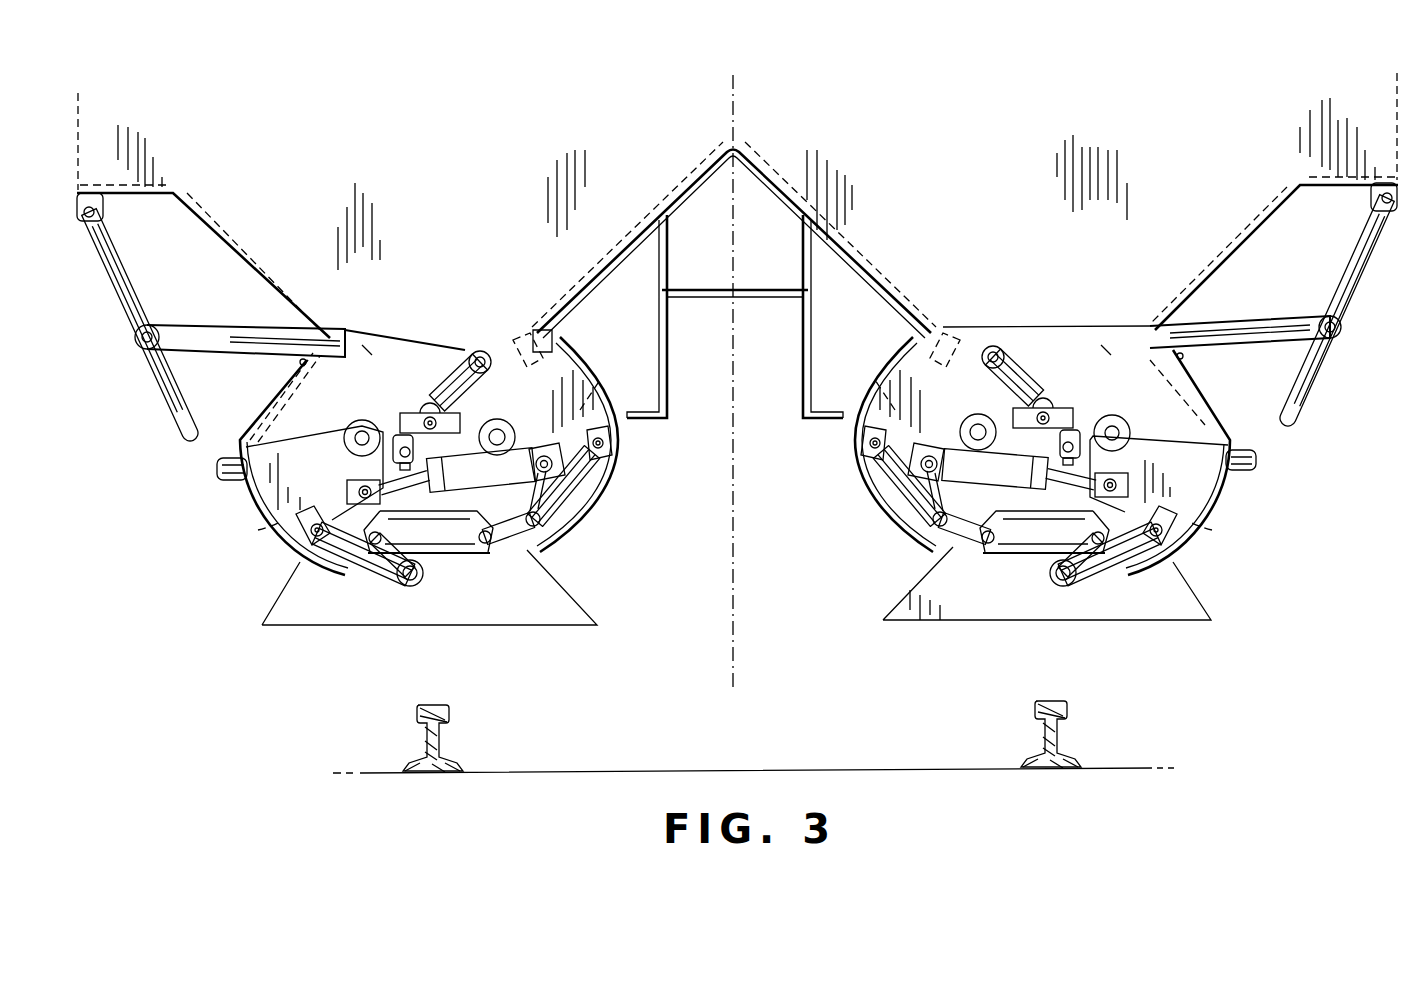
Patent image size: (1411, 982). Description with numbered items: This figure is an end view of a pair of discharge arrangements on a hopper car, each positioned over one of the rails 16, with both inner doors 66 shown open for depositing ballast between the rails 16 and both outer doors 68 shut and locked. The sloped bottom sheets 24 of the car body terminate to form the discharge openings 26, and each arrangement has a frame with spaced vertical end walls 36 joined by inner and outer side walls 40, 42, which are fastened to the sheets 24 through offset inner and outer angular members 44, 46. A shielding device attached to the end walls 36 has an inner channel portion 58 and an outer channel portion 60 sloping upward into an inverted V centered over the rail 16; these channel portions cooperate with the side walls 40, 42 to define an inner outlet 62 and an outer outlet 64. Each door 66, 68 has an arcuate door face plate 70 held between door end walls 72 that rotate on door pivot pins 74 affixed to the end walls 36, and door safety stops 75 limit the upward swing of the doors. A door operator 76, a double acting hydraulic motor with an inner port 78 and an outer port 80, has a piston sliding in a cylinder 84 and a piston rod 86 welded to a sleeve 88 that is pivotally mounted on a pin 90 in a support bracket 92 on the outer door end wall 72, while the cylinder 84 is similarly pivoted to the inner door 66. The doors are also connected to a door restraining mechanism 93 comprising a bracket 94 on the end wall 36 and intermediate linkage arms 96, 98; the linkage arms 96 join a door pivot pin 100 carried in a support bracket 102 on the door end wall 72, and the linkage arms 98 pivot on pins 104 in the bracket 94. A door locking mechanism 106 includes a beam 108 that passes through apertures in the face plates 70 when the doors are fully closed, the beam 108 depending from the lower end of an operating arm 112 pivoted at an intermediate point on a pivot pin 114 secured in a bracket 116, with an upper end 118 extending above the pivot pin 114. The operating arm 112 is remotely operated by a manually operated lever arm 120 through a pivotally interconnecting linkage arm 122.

The rail 16 is at (418, 712).
The sheet 24 is at (237, 247).
The discharge opening 26 is at (456, 297).
The end wall 36 is at (432, 611).
The inner side wall 40 is at (613, 380).
The outer side wall 42 is at (290, 394).
The inner angular member 44 is at (503, 345).
The outer angular member 46 is at (367, 350).
The inner channel portion 58 is at (600, 612).
The outer channel portion 60 is at (275, 612).
The inner outlet 62 is at (603, 482).
The outer outlet 64 is at (258, 530).
The inner door 66 is at (594, 352).
The outer door 68 is at (241, 504).
The arcuate door face plate 70 is at (608, 348).
The door end wall 72 is at (615, 352).
The door pivot pin 74 is at (362, 432).
The door safety stop 75 is at (302, 363).
The door operator 76 is at (528, 470).
The inner port 78 is at (516, 435).
The outer port 80 is at (457, 497).
The cylinder 84 is at (495, 490).
The piston rod 86 is at (418, 497).
The sleeve 88 is at (343, 492).
The pin 90 is at (360, 486).
The support bracket 92 is at (570, 486).
The door restraining mechanism 93 is at (472, 565).
The bracket 94 is at (462, 553).
The linkage arm 96 is at (555, 492).
The linkage arm 98 is at (400, 588).
The door pivot pin 100 is at (614, 442).
The support bracket 102 is at (607, 427).
The pin 104 is at (485, 548).
The door locking mechanism 106 is at (444, 355).
The beam 108 is at (216, 466).
The operating arm 112 is at (438, 437).
The pivot pin 114 is at (428, 405).
The bracket 116 is at (397, 422).
The upper end 118 is at (478, 348).
The lever arm 120 is at (165, 367).
The linkage arm 122 is at (200, 326).